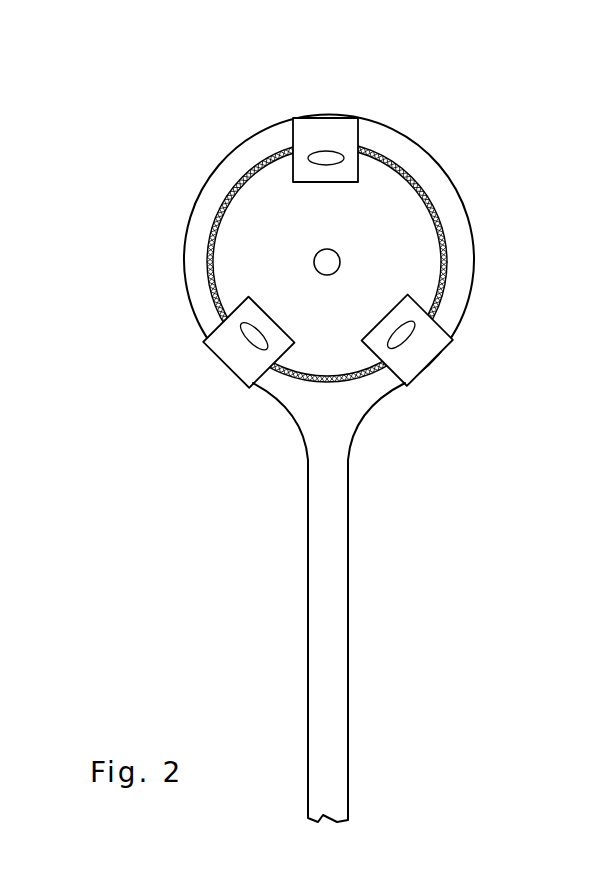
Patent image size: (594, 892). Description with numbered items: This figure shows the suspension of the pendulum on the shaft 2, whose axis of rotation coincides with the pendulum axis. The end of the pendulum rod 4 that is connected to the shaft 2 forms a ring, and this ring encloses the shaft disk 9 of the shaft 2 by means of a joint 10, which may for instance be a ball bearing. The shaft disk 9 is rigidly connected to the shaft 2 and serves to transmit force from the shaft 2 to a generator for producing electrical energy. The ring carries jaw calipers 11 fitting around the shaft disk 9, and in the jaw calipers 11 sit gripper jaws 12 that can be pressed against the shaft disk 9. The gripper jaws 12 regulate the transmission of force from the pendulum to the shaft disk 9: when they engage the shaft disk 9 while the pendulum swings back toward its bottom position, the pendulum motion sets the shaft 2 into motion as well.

The shaft 2 is at (330, 260).
The pendulum rod 4 is at (334, 642).
The shaft disk 9 is at (255, 237).
The joint 10 is at (437, 220).
The jaw caliper 11 is at (345, 127).
The gripper jaws 12 is at (323, 157).